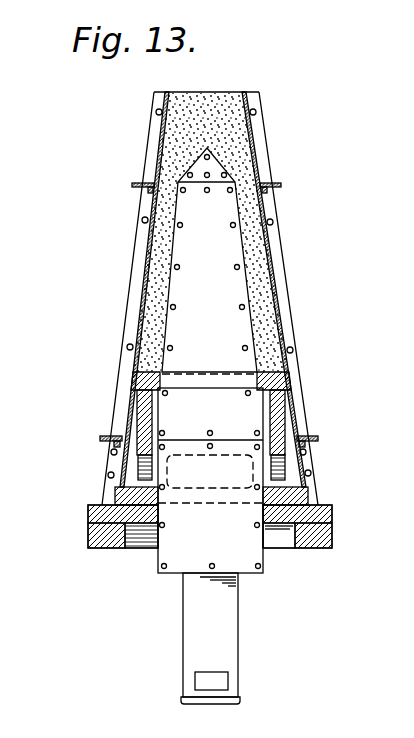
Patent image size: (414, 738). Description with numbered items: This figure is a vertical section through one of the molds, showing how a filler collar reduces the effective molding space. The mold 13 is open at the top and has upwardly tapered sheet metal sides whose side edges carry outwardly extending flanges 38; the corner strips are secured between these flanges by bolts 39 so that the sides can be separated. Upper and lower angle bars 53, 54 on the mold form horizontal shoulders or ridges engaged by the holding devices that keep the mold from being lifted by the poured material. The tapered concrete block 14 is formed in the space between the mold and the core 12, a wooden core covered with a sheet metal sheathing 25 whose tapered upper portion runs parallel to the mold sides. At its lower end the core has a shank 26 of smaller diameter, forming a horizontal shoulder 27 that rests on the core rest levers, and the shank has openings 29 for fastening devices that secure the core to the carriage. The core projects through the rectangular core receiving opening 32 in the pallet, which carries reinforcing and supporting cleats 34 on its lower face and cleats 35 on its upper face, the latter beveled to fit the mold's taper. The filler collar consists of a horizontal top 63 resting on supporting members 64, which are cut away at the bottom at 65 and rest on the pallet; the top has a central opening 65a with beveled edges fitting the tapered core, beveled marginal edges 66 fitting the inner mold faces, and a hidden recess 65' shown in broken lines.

The core 12 is at (210, 480).
The mold 13 is at (281, 285).
The tapered concrete block 14 is at (153, 318).
The sheathing 25 is at (209, 260).
The shank 26 is at (210, 638).
The horizontal shoulder 27 is at (250, 574).
The openings 29 is at (228, 682).
The core receiving opening 32 is at (156, 516).
The reinforcing and supporting cleats 34 is at (118, 536).
The cleats 35 is at (293, 496).
The outwardly extending flanges 38 is at (133, 299).
The bolts 39 is at (274, 228).
The angle bar 53 is at (132, 185).
The angle bar 54 is at (101, 437).
The horizontal top 63 is at (283, 371).
The supporting members 64 is at (140, 408).
The cut away portion 65 is at (209, 476).
The central opening 65a is at (161, 385).
The hidden recess 65' is at (210, 471).
The beveled marginal edges 66 is at (290, 386).